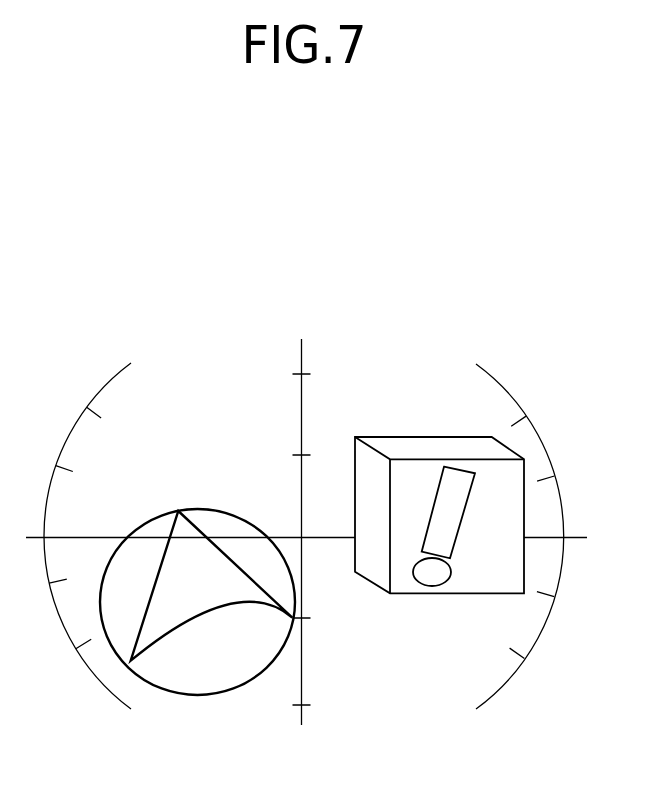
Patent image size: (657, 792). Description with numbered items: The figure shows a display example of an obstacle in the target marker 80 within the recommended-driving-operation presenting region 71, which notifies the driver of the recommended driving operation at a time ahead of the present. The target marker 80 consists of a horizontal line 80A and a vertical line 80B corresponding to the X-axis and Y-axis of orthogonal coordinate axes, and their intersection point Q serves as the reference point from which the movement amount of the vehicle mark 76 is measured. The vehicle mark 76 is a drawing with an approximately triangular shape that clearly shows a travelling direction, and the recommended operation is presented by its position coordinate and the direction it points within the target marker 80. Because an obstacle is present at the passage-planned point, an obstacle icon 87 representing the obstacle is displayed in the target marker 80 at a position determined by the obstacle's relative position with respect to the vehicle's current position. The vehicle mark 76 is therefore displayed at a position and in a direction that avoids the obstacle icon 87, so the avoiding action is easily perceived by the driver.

The recommended-driving-operation presenting region 71 is at (286, 314).
The target marker 80 is at (450, 342).
The horizontal line 80A is at (95, 537).
The vertical line 80B is at (302, 413).
The vehicle mark 76 is at (202, 508).
The obstacle icon 87 is at (440, 595).
The intersection point Q is at (307, 538).